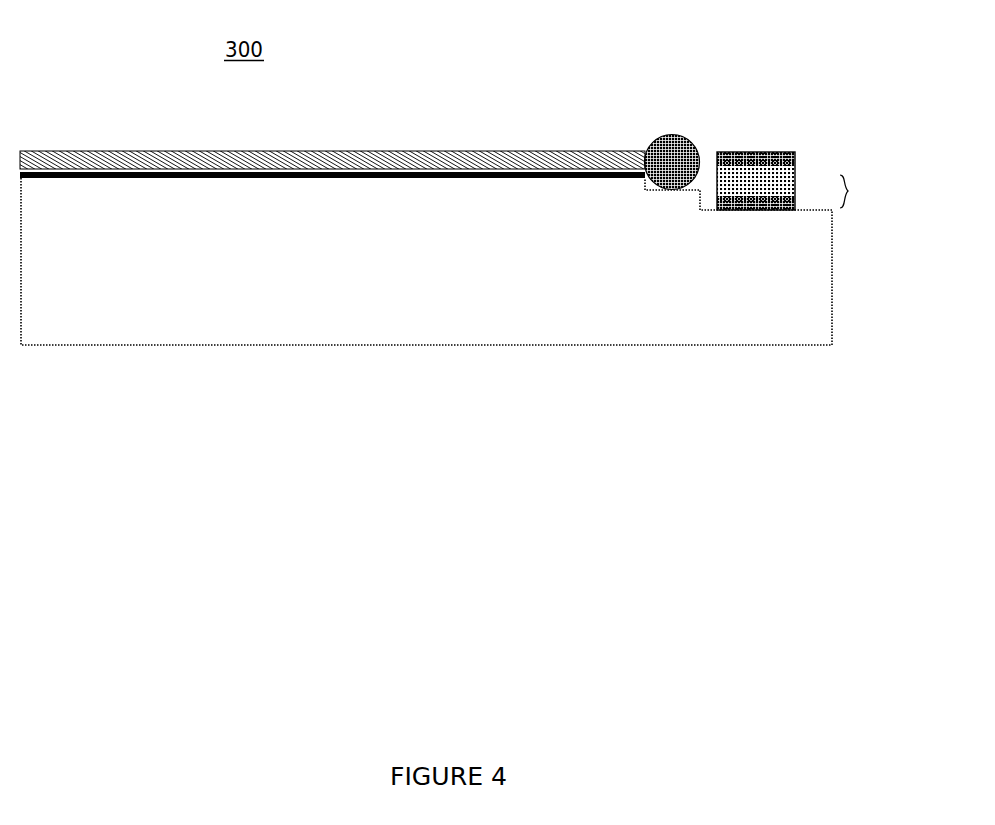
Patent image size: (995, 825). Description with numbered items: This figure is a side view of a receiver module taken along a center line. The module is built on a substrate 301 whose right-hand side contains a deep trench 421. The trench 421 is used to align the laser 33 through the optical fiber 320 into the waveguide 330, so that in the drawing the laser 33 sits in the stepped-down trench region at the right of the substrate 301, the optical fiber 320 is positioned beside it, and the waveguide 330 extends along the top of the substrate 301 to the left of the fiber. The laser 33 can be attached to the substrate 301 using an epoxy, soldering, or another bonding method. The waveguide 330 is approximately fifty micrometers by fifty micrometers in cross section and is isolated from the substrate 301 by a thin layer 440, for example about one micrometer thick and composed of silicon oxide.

The substrate 301 is at (647, 344).
The optical fiber 320 is at (650, 133).
The laser 33 is at (769, 152).
The waveguide 330 is at (331, 151).
The layer 440 is at (417, 178).
The deep trench 421 is at (869, 191).